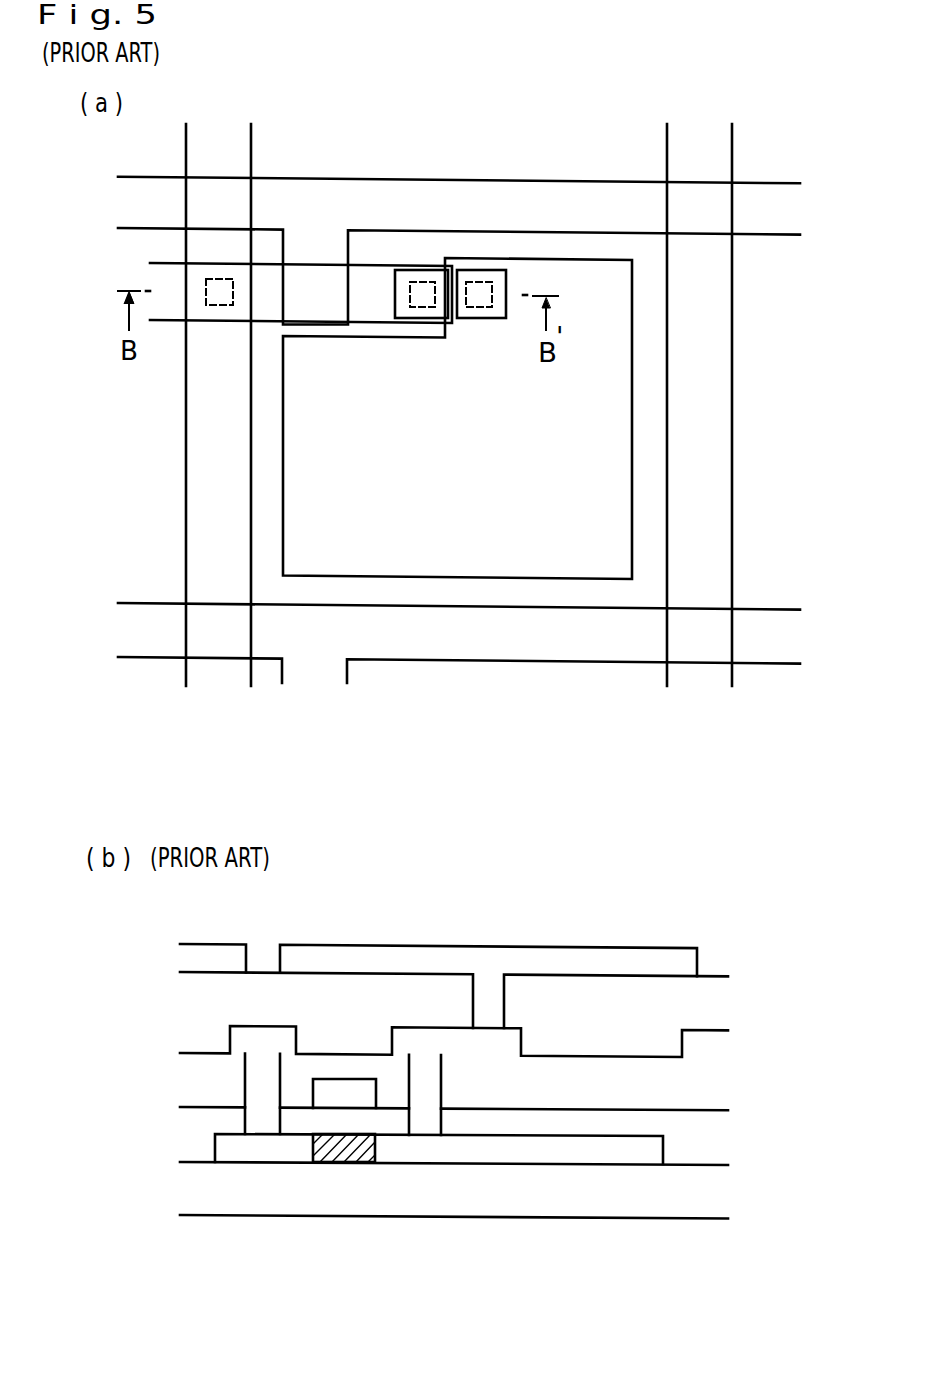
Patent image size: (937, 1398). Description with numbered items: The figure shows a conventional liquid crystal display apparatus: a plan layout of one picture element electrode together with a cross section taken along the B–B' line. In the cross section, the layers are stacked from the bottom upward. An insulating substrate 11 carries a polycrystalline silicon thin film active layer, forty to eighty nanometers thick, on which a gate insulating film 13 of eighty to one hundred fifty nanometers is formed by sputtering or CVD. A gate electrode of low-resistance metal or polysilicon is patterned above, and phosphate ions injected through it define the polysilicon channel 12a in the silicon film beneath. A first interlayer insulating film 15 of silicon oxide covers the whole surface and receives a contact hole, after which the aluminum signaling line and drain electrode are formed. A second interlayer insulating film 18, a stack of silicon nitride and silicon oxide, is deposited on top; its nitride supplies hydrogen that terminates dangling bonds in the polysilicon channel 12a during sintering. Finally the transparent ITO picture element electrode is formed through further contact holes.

The insulating substrate 11 is at (475, 1188).
The polysilicon channel 12a is at (343, 1153).
The gate insulating film 13 is at (497, 1123).
The first interlayer insulating film 15 is at (530, 1073).
The second interlayer insulating film 18 is at (587, 993).